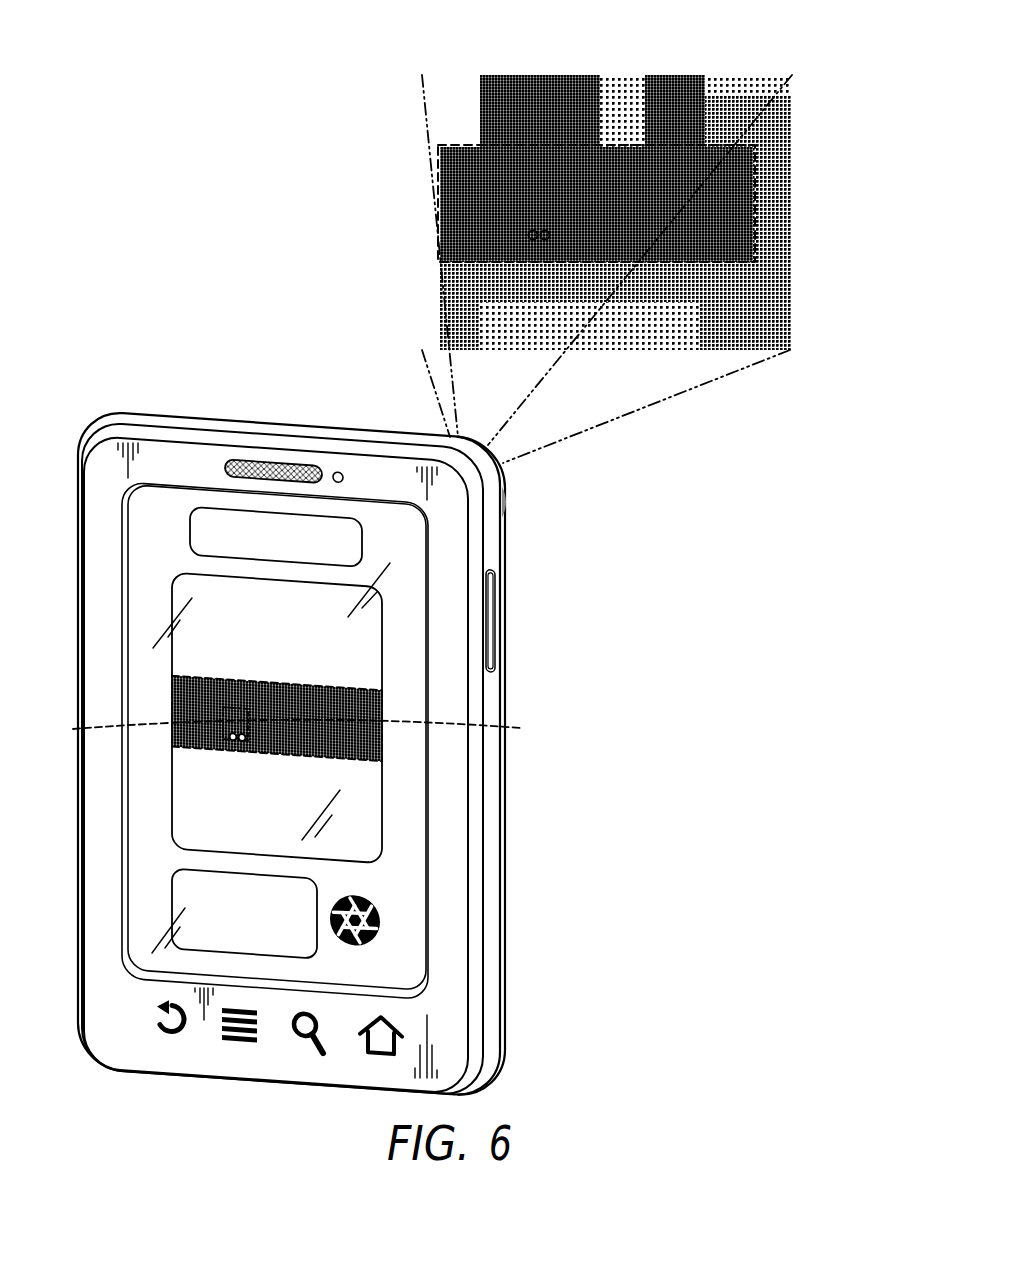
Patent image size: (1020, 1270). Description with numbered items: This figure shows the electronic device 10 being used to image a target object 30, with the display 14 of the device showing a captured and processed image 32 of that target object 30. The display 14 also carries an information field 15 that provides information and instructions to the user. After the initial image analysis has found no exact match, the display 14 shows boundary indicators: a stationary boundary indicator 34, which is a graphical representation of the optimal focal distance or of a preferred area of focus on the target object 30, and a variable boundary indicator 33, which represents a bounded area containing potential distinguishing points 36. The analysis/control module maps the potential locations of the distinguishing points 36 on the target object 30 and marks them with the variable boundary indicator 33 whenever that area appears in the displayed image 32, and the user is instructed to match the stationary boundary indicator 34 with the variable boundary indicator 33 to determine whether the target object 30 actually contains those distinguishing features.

The electronic device 10 is at (223, 372).
The display 14 is at (372, 628).
The information field 15 is at (188, 532).
The target object 30 is at (487, 150).
The image 32 is at (255, 695).
The variable boundary indicator 33 is at (147, 730).
The stationary boundary indicator 34 is at (311, 730).
The distinguishing points 36 is at (233, 733).